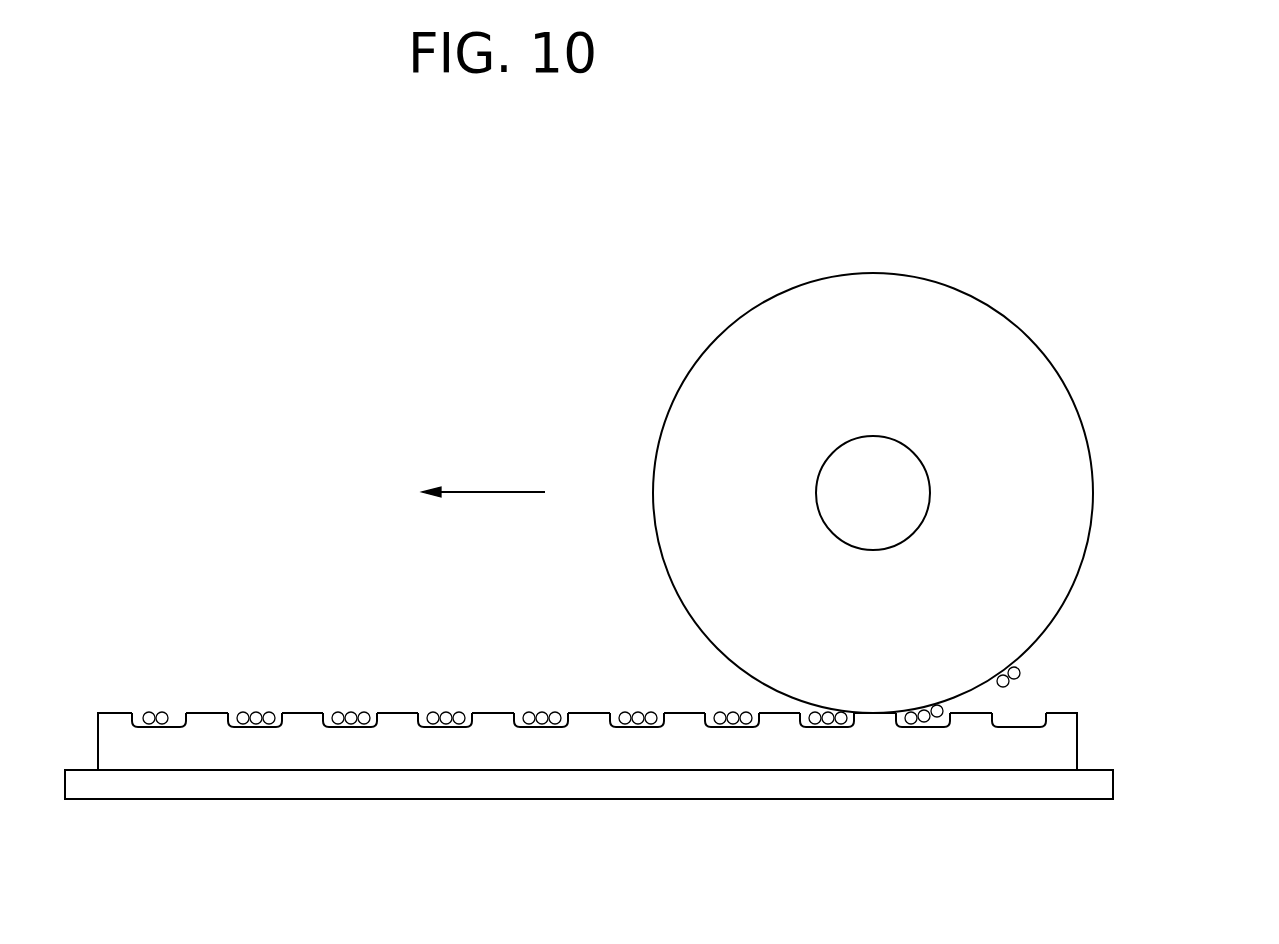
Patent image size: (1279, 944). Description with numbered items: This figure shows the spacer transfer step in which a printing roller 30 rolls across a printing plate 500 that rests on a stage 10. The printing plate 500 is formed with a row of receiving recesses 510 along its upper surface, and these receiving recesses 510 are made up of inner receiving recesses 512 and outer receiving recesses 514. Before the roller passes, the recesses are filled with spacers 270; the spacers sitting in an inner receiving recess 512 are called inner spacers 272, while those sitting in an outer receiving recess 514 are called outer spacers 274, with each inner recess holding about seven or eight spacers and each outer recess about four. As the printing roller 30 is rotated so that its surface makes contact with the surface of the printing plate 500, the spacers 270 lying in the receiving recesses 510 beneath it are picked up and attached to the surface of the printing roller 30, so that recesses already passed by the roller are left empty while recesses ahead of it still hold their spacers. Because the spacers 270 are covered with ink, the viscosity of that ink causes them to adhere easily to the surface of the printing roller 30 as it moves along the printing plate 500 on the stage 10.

The stage 10 is at (832, 782).
The printing roller 30 is at (1070, 508).
The spacers 270 is at (538, 629).
The inner spacers 272 is at (250, 713).
The outer spacers 274 is at (160, 713).
The printing plate 500 is at (671, 810).
The receiving recesses 510 is at (587, 812).
The inner receiving recesses 512 is at (250, 727).
The outer receiving recesses 514 is at (158, 727).